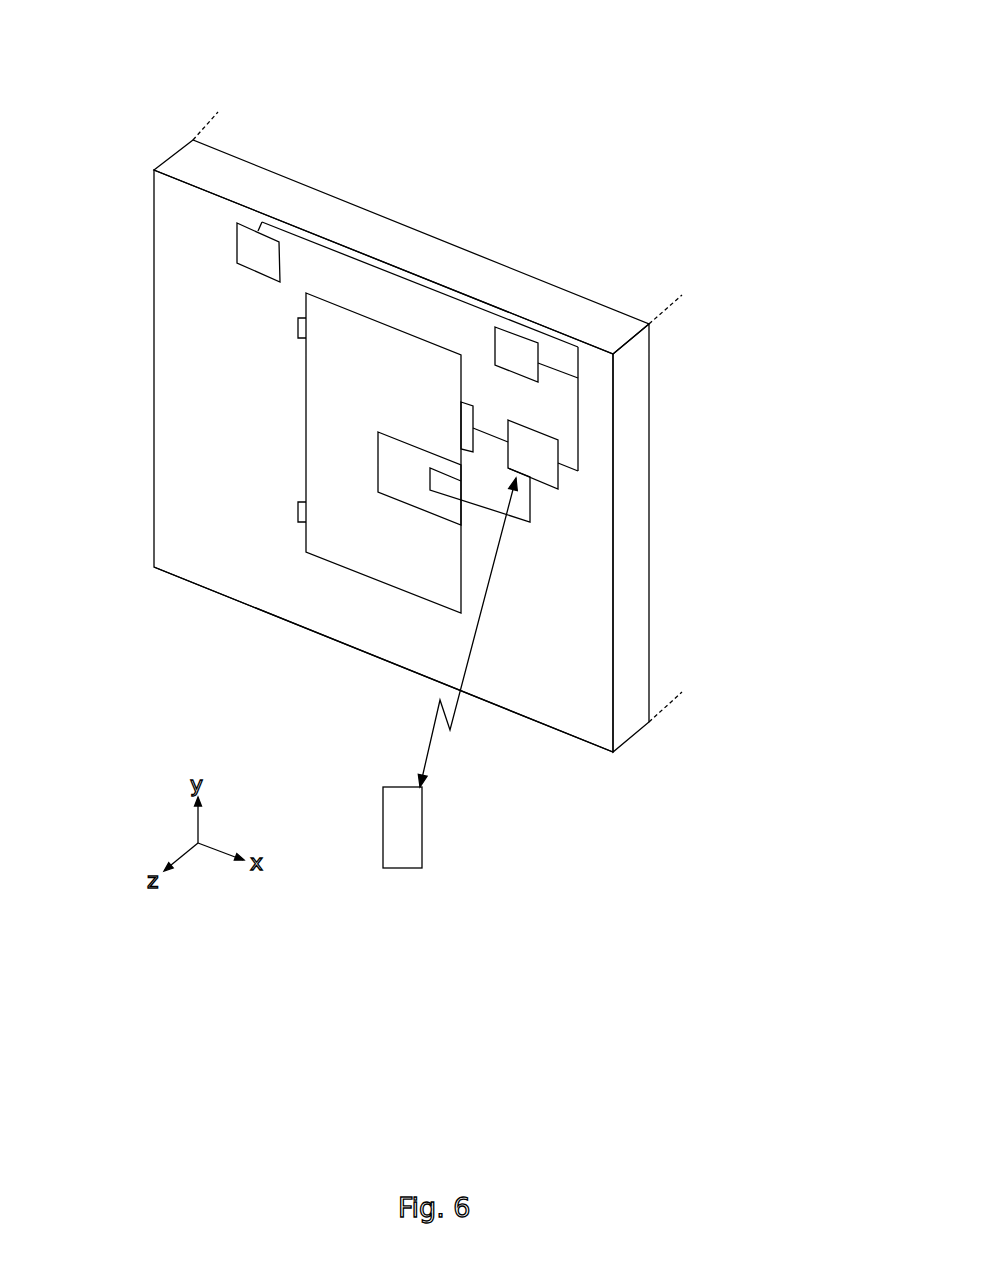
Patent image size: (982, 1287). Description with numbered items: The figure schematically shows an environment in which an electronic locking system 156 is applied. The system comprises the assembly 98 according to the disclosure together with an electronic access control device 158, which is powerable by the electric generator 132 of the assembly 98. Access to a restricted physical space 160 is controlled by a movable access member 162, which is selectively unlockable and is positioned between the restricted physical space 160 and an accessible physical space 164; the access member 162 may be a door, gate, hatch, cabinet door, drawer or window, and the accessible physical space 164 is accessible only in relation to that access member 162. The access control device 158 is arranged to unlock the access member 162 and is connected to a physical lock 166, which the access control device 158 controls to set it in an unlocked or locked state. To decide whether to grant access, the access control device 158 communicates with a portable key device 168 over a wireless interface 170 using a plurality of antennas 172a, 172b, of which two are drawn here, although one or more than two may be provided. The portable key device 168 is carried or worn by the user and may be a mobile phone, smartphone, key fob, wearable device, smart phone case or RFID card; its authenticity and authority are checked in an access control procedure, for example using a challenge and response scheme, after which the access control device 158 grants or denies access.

The electronic locking system 156 is at (414, 385).
The restricted physical space 160 is at (481, 200).
The accessible physical space 164 is at (192, 687).
The movable access member 162 is at (368, 361).
The antenna 172a is at (237, 241).
The antenna 172b is at (520, 334).
The physical lock 166 is at (466, 413).
The electronic access control device 158 is at (553, 478).
The assembly 98 is at (400, 502).
The electric generator 132 is at (443, 497).
The portable key device 168 is at (395, 813).
The wireless interface 170 is at (458, 702).